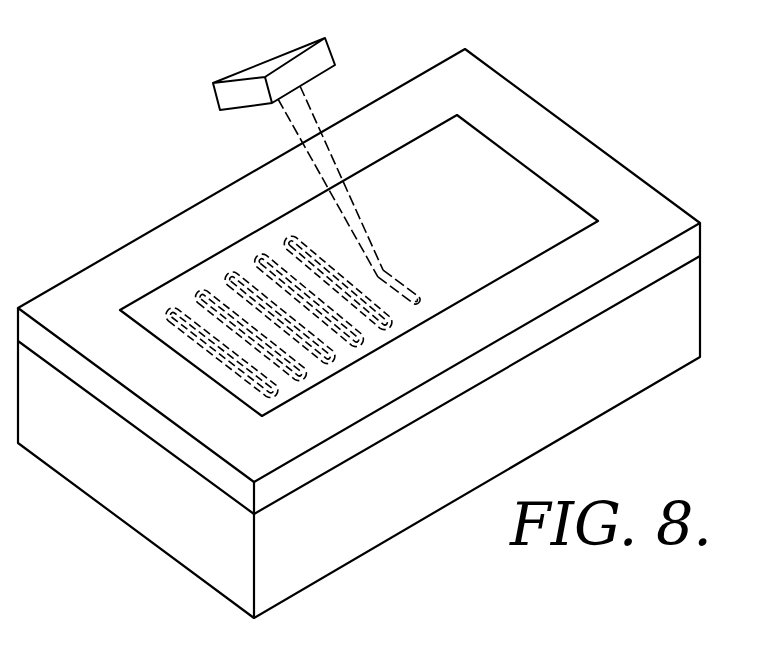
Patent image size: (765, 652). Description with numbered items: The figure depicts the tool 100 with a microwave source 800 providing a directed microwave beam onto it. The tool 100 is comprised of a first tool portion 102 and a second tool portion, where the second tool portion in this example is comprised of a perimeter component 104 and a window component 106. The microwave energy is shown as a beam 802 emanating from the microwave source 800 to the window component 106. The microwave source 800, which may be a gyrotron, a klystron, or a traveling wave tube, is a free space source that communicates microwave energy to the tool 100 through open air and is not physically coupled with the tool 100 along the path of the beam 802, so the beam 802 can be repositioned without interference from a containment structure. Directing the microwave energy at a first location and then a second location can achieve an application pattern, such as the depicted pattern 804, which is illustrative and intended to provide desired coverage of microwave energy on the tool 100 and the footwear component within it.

The tool 100 is at (372, 333).
The first tool portion 102 is at (645, 370).
The perimeter component 104 is at (646, 211).
The window component 106 is at (507, 173).
The microwave source 800 is at (246, 57).
The beam 802 is at (287, 131).
The pattern 804 is at (197, 289).